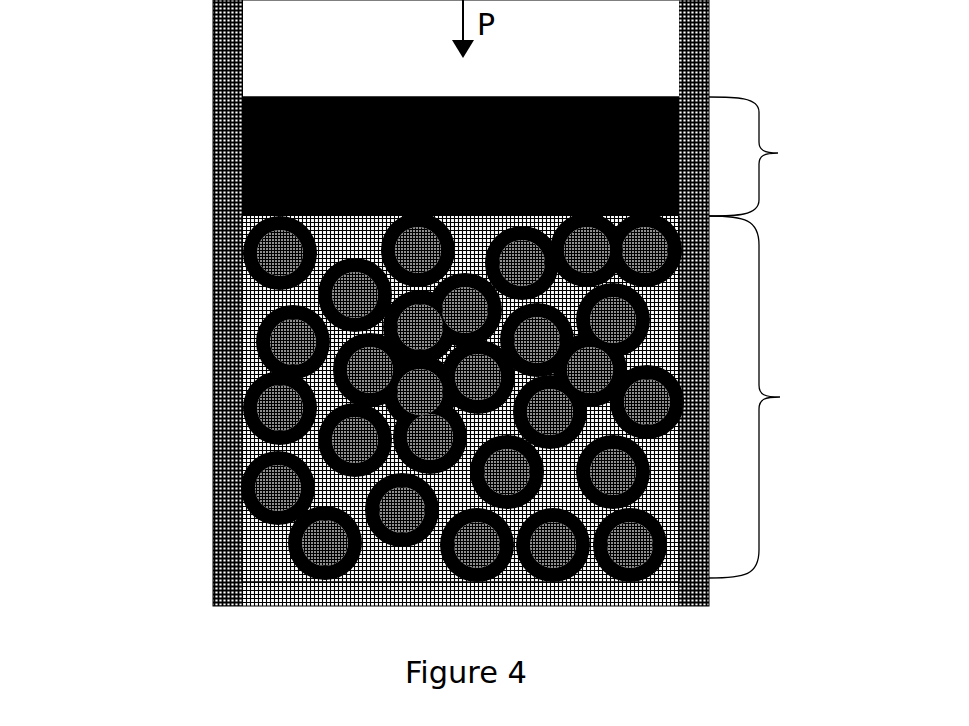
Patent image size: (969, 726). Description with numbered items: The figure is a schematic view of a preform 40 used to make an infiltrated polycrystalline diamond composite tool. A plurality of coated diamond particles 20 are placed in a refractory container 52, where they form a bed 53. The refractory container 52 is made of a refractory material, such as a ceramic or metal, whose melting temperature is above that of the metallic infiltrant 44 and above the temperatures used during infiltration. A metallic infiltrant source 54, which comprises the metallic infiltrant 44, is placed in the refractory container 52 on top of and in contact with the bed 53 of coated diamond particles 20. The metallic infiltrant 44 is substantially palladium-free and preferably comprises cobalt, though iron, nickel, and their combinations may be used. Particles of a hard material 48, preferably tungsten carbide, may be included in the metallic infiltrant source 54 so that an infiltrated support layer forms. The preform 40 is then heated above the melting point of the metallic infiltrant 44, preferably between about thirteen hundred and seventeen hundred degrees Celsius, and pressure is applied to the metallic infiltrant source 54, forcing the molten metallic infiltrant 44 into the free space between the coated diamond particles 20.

The preform 40 is at (85, 113).
The refractory container 52 is at (212, 550).
The bed 53 is at (780, 397).
The coated diamond particles 20 is at (258, 243).
The metallic infiltrant 44 is at (558, 97).
The hard particles 48 is at (405, 97).
The metallic infiltrant source 54 is at (778, 153).